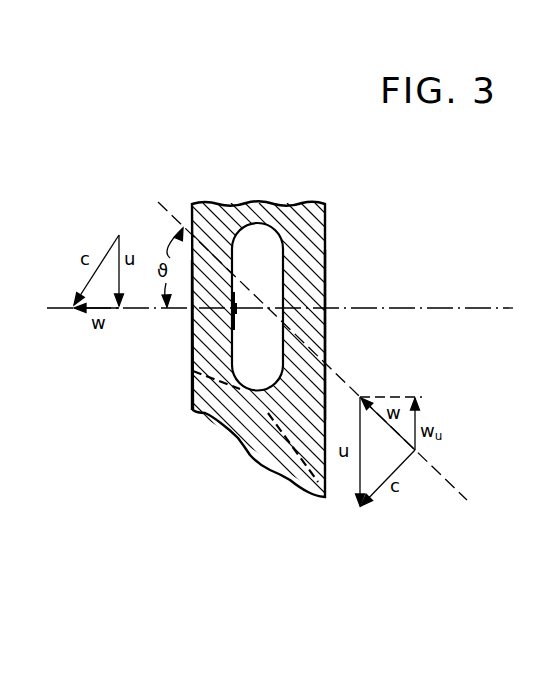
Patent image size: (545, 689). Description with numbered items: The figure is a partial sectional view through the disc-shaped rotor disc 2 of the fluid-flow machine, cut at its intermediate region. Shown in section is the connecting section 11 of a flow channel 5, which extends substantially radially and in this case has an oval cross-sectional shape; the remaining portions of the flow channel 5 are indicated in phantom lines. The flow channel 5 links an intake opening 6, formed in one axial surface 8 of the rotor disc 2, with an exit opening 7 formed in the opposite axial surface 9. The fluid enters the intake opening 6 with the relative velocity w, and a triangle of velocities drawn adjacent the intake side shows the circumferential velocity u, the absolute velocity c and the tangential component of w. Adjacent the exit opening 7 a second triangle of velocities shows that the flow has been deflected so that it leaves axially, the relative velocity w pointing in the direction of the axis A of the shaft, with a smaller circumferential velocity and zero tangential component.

The rotor disc 2 is at (296, 216).
The flow channel 5 is at (253, 250).
The intake opening 6 is at (336, 350).
The exit opening 7 is at (180, 333).
The axial surface 8 is at (327, 288).
The opposite axial surface 9 is at (192, 383).
The connecting section 11 is at (268, 355).
The axis A is at (280, 297).